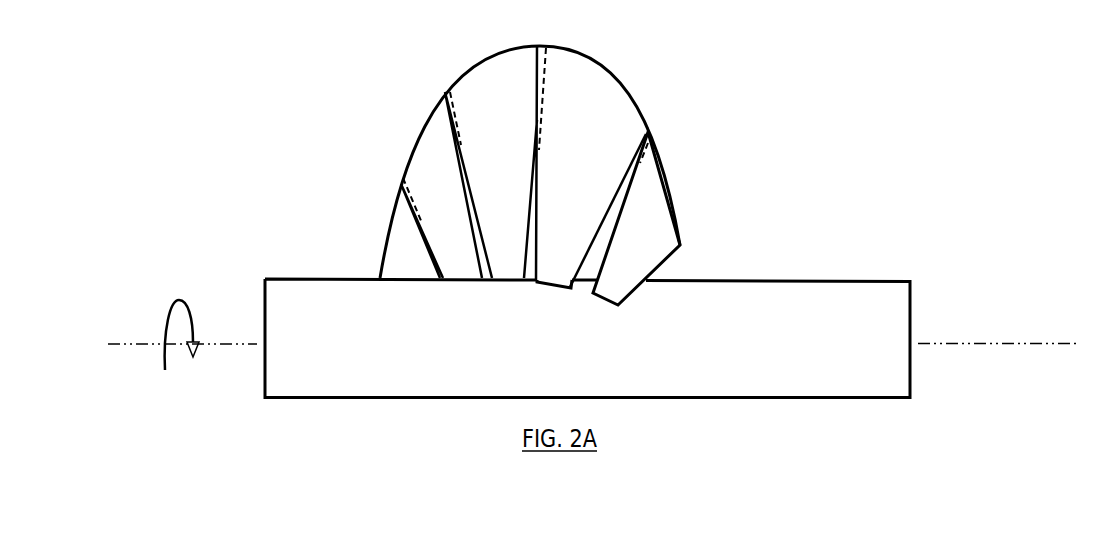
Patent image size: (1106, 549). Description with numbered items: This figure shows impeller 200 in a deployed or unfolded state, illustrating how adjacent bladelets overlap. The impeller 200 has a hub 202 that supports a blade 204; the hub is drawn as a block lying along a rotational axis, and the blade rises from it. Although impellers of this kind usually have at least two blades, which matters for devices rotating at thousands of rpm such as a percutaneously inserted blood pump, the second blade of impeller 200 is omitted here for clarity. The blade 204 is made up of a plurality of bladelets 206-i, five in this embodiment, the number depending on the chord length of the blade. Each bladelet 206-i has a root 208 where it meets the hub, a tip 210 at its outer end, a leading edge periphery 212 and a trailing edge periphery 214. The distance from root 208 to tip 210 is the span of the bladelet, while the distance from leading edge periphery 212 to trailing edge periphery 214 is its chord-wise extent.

The impeller 200 is at (812, 156).
The hub 202 is at (825, 346).
The blade 204 is at (373, 103).
The bladelet 206-i is at (600, 170).
The root 208 is at (553, 288).
The tip 210 is at (612, 73).
The leading edge periphery 212 is at (537, 67).
The trailing edge periphery 214 is at (600, 230).